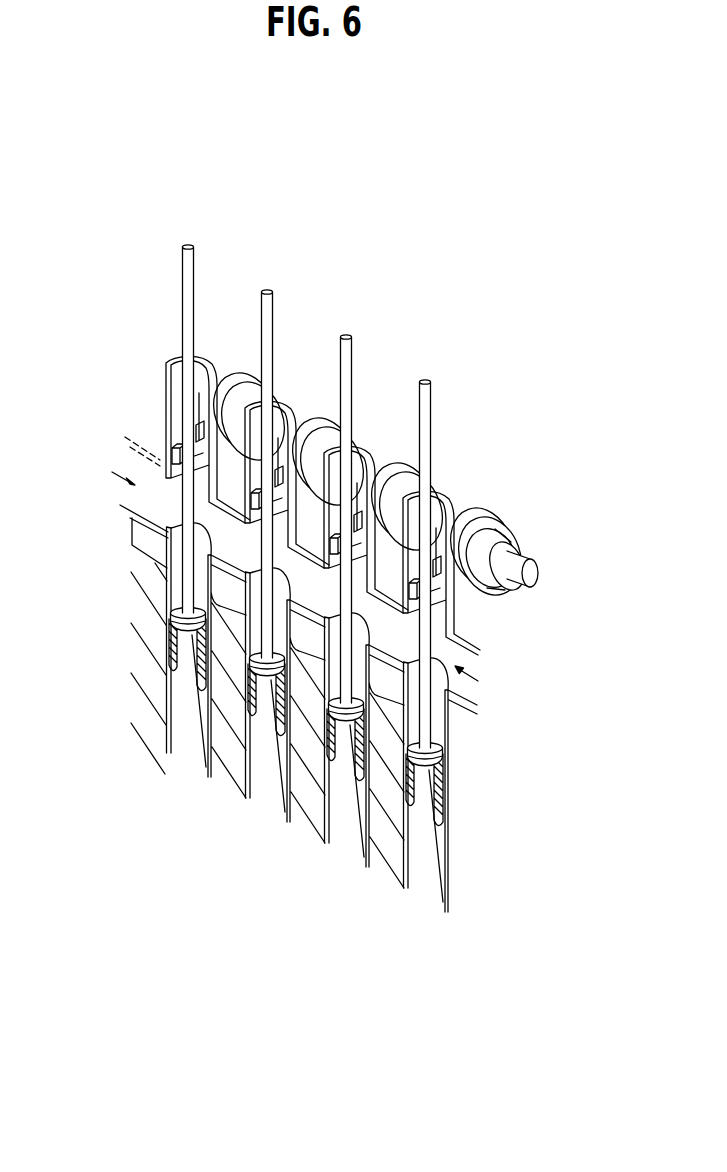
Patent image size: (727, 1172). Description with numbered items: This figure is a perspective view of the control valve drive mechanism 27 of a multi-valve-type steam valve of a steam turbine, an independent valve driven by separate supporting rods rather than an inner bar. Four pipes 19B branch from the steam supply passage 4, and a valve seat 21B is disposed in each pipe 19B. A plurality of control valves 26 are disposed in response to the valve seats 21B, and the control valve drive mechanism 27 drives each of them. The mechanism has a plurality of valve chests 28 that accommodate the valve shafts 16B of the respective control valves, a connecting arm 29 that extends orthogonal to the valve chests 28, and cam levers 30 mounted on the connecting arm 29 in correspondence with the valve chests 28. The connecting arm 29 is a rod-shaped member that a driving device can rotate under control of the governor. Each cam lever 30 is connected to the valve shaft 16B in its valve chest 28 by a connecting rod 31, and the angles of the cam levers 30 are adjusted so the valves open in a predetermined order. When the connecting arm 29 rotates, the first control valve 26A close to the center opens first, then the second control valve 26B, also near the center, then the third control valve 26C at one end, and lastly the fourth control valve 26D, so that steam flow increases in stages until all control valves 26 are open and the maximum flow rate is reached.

The steam supply passage 4 is at (133, 515).
The valve shaft 16B is at (188, 246).
The pipe 19B is at (174, 580).
The valve seat 21B is at (445, 800).
The control valve 26 is at (302, 799).
The first control valve 26A is at (267, 680).
The second control valve 26B is at (346, 725).
The third control valve 26C is at (188, 635).
The fourth control valve 26D is at (425, 770).
The control valve drive mechanism 27 is at (483, 358).
The valve chest 28 is at (180, 365).
The connecting arm 29 is at (538, 579).
The cam lever 30 is at (400, 478).
The connecting rod 31 is at (176, 455).